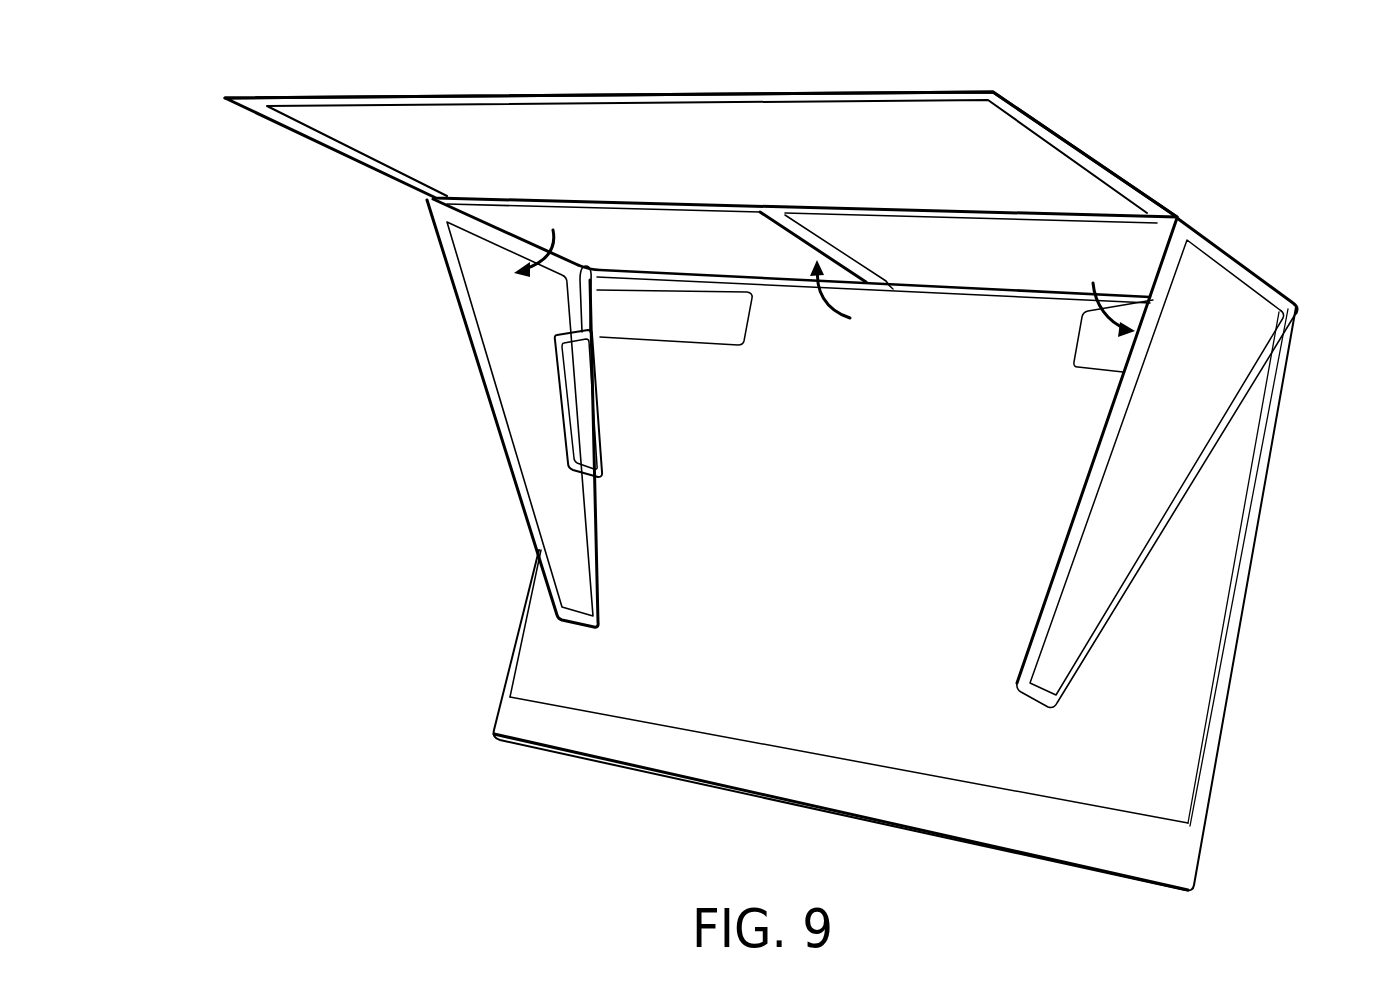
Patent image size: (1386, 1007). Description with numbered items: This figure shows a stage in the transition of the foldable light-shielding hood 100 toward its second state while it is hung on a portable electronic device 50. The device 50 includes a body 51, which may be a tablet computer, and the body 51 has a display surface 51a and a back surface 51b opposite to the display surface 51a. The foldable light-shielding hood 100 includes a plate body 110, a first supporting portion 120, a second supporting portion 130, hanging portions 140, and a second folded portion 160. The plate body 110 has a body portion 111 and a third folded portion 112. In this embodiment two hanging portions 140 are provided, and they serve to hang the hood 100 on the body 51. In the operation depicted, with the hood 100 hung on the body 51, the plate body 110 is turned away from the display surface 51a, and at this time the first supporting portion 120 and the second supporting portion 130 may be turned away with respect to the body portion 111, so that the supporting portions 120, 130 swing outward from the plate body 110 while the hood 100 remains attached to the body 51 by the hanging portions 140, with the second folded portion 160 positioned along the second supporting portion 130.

The foldable light-shielding hood 100 is at (193, 66).
The plate body 110 is at (1272, 112).
The body portion 111 is at (1153, 250).
The third folded portion 112 is at (1023, 153).
The first supporting portion 120 is at (1183, 433).
The second supporting portion 130 is at (510, 368).
The hanging portion 140 is at (612, 312).
The second folded portion 160 is at (585, 432).
The portable electronic device 50 is at (1365, 916).
The body 51 is at (978, 752).
The display surface 51a is at (800, 662).
The back surface 51b is at (1226, 726).